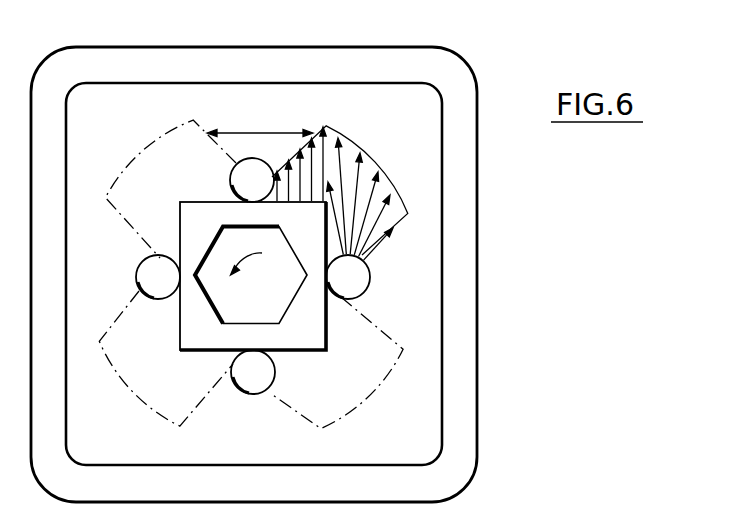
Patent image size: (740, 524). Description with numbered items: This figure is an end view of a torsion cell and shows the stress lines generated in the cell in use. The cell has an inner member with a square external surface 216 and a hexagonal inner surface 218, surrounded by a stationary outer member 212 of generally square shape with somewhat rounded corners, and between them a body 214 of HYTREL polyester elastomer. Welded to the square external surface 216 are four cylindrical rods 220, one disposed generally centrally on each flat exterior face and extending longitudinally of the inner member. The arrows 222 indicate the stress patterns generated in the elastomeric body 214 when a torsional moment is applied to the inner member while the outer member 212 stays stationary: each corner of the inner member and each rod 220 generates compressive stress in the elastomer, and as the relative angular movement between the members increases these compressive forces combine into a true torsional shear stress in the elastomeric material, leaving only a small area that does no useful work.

The outer member 212 is at (462, 184).
The body of HYTREL polyester elastomer 214 is at (292, 102).
The square external surface 216 is at (330, 320).
The hexagonal inner surface 218 is at (305, 276).
The cylindrical rods 220 is at (241, 183).
The arrows indicating stress patterns 222 is at (146, 142).